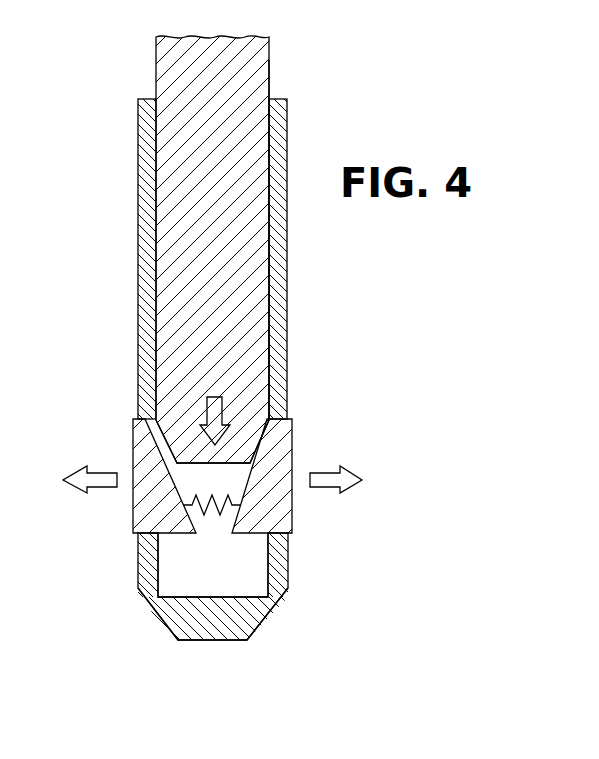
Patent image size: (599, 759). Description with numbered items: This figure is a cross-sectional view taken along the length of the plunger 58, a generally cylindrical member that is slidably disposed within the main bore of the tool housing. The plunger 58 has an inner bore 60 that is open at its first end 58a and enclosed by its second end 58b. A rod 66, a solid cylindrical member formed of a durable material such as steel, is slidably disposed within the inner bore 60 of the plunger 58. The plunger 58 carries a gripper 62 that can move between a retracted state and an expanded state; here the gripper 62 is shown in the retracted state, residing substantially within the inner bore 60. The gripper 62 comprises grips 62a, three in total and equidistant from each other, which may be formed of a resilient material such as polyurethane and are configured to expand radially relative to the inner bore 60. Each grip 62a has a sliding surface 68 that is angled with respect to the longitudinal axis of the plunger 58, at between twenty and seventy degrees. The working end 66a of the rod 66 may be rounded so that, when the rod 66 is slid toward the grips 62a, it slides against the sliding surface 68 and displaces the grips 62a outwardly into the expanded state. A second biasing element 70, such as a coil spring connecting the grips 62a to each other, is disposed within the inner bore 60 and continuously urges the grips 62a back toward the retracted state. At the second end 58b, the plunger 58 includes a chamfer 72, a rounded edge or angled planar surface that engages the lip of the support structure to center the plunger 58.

The plunger 58 is at (227, 349).
The first end 58a is at (146, 98).
The second end 58b is at (272, 606).
The inner bore 60 is at (270, 119).
The gripper 62 is at (133, 504).
The grip 62a is at (292, 452).
The rod 66 is at (270, 57).
The working end 66a is at (268, 365).
The sliding surface 68 is at (247, 493).
The second biasing element 70 is at (209, 512).
The chamfer 72 is at (162, 614).